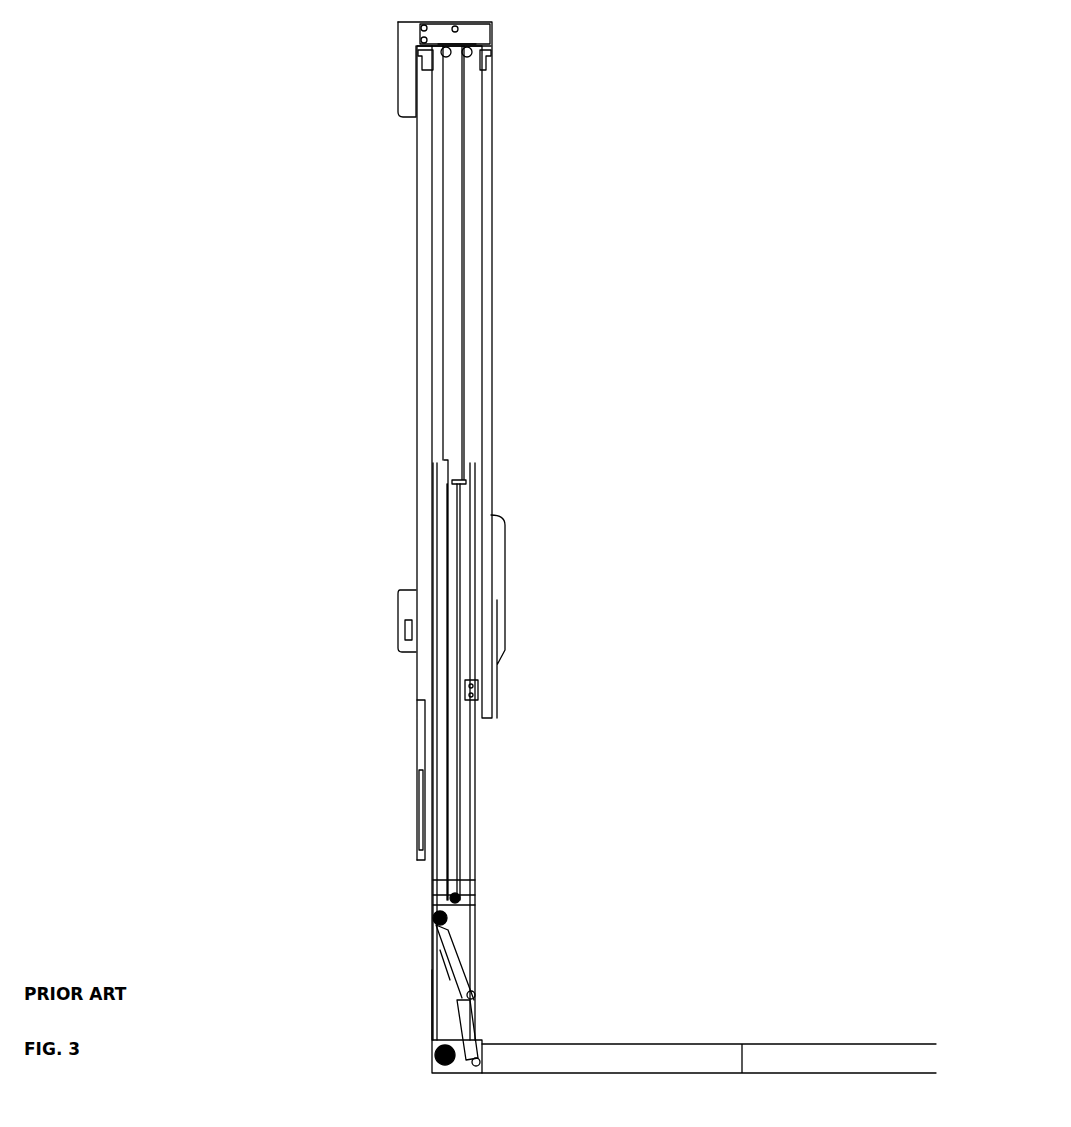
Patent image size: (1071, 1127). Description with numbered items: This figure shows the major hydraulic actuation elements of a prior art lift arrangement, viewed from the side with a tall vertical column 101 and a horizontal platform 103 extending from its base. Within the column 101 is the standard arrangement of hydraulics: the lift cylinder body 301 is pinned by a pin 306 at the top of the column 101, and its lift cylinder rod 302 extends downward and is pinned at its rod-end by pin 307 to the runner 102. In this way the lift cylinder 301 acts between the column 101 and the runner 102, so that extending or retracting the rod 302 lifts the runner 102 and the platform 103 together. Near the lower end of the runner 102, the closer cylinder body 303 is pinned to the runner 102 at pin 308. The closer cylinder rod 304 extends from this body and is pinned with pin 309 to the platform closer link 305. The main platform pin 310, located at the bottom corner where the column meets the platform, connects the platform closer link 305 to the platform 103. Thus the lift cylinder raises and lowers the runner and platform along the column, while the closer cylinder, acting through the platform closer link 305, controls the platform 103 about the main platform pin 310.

The column 101 is at (417, 250).
The runner 102 is at (480, 800).
The platform 103 is at (688, 1044).
The lift cylinder body 301 is at (452, 340).
The lift cylinder rod 302 is at (452, 538).
The closer cylinder body 303 is at (440, 947).
The closer cylinder rod 304 is at (450, 1032).
The platform closer link 305 is at (476, 1056).
The pin 306 is at (455, 29).
The rod-end pin 307 is at (470, 897).
The pin 308 is at (438, 917).
The pin 309 is at (480, 1058).
The main platform pin 310 is at (436, 1056).